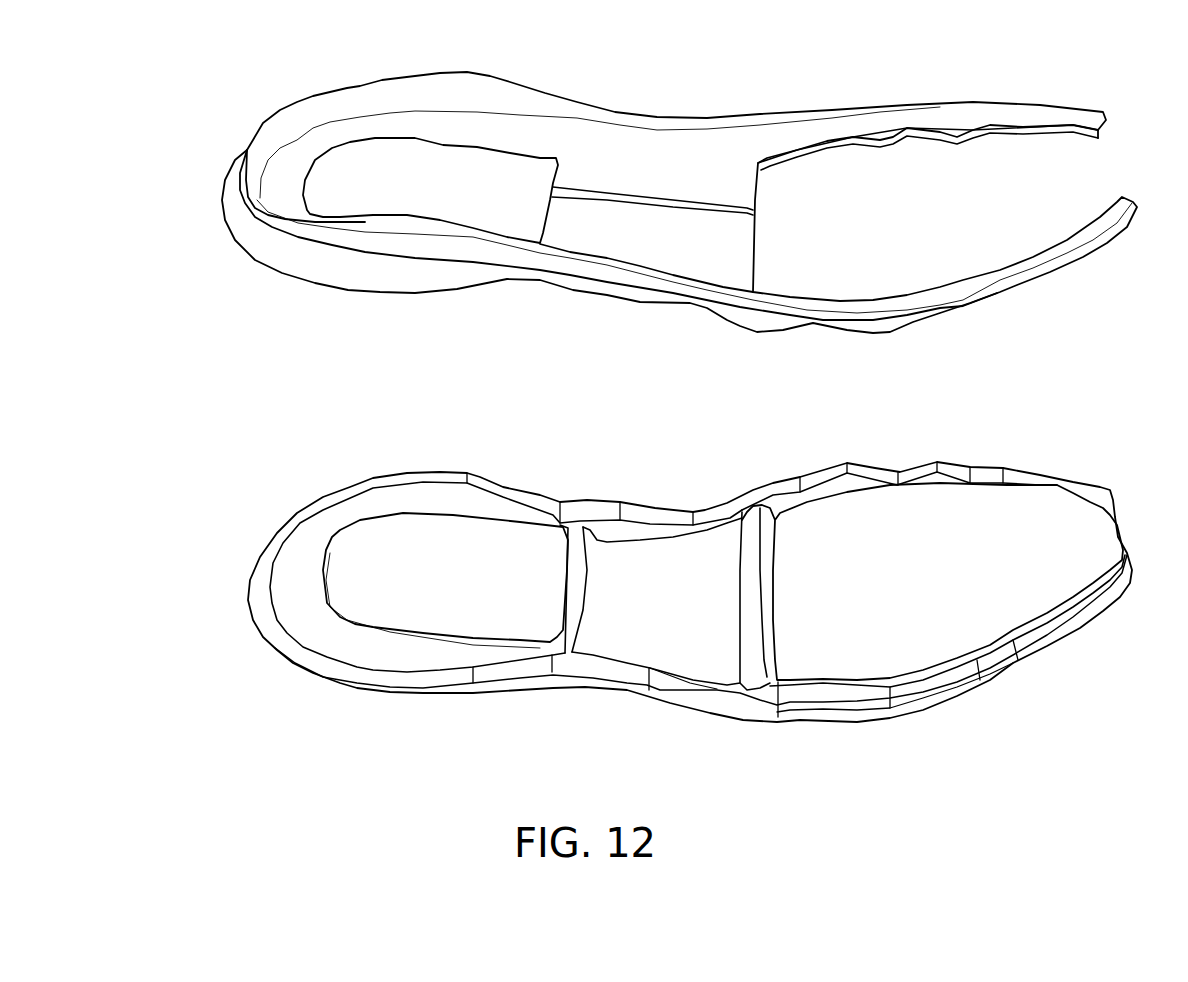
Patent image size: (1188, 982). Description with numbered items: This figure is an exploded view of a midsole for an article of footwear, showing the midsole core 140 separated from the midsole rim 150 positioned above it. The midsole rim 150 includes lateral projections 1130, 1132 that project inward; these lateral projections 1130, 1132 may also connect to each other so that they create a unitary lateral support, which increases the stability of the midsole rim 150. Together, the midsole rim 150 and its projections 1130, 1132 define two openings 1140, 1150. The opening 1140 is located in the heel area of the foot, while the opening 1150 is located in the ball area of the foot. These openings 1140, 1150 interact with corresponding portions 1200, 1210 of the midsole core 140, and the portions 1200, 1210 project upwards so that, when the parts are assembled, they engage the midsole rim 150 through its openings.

The midsole core 140 is at (287, 640).
The midsole rim 150 is at (832, 112).
The lateral projection 1130 is at (653, 127).
The lateral projection 1132 is at (643, 230).
The opening 1140 is at (415, 193).
The opening 1150 is at (947, 177).
The portion of midsole core 1200 is at (855, 658).
The portion of midsole core 1210 is at (538, 543).